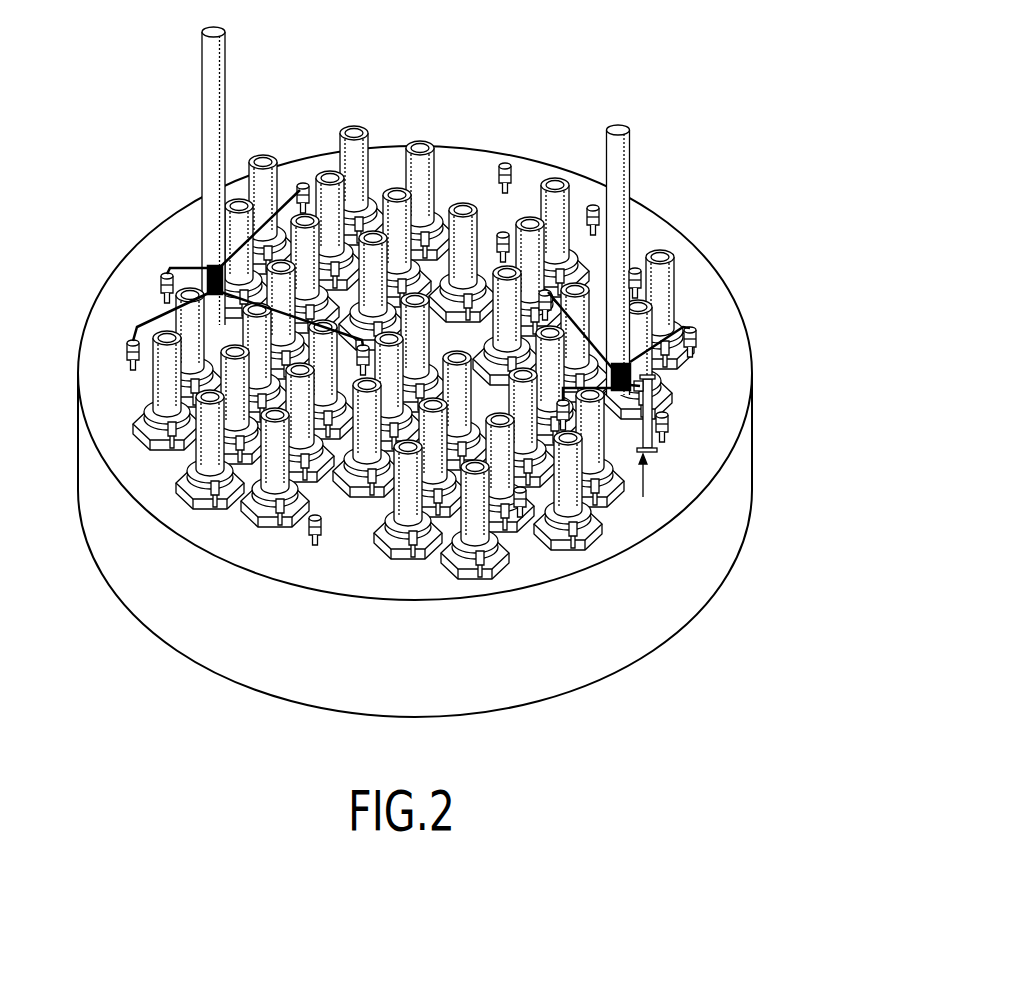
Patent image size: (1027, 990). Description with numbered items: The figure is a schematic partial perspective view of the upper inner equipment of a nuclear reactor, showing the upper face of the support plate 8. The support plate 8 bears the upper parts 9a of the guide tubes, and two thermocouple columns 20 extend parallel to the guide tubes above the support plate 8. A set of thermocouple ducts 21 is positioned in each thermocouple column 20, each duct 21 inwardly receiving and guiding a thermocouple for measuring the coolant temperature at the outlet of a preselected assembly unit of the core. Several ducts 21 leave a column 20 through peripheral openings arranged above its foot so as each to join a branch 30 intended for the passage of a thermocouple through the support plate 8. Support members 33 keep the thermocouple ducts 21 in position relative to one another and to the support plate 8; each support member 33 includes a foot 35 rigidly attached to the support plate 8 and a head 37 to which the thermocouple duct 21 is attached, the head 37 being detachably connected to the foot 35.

The support plate 8 is at (130, 590).
The upper parts of the guide tubes 9a is at (158, 375).
The thermocouple column 20 is at (419, 508).
The thermocouple duct 21 is at (285, 180).
The branch 30 is at (522, 168).
The support member 33 is at (645, 490).
The foot 35 is at (652, 451).
The head 37 is at (655, 388).